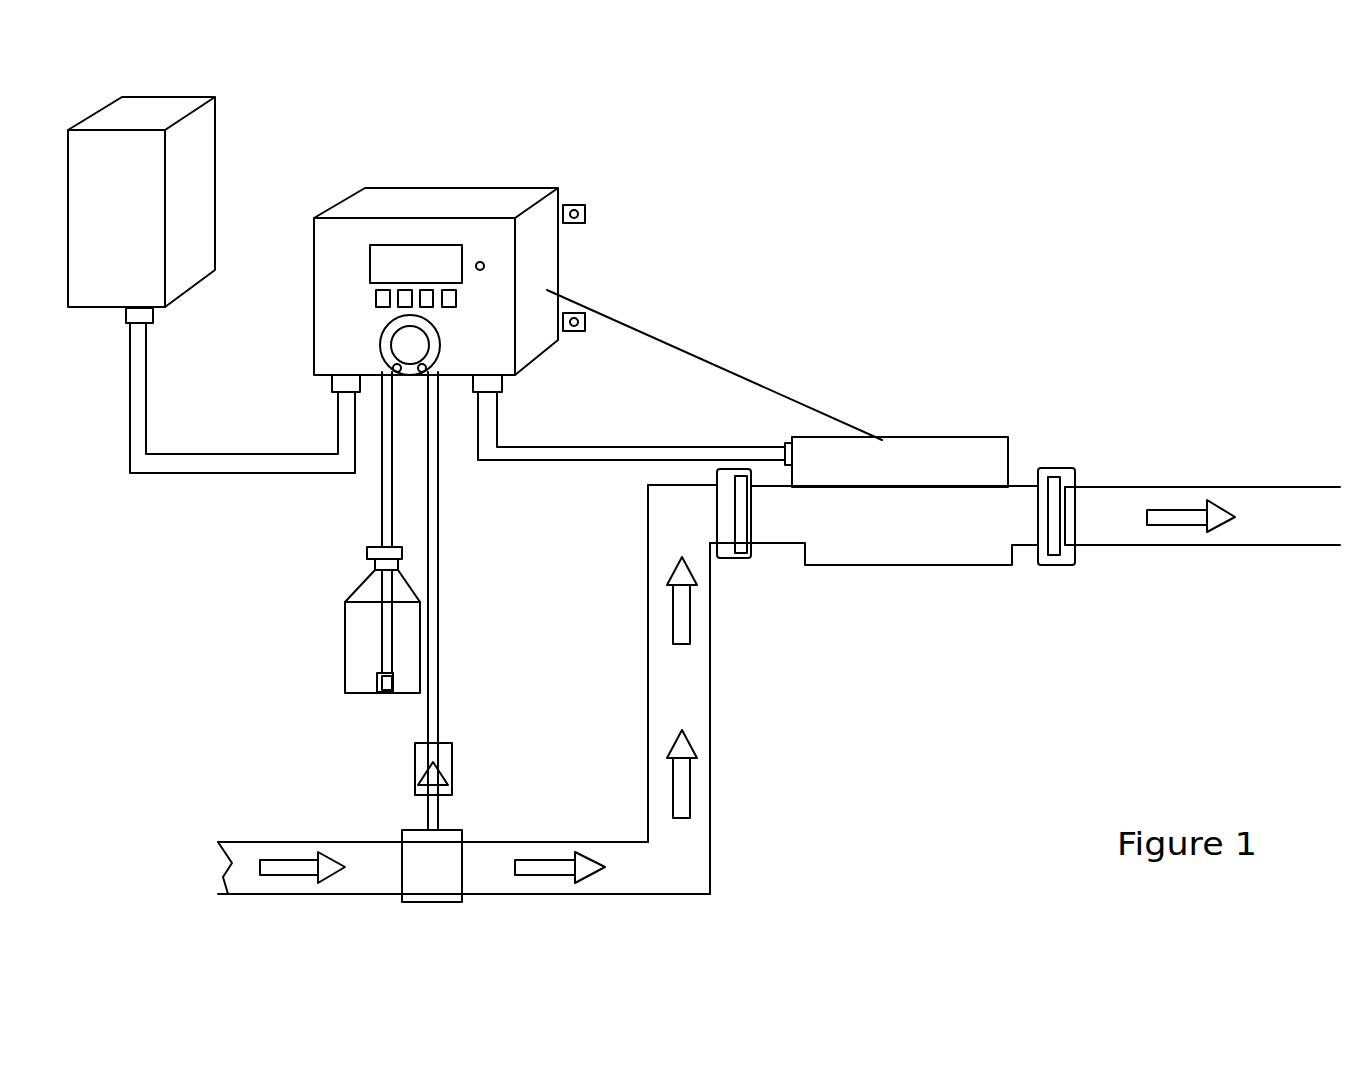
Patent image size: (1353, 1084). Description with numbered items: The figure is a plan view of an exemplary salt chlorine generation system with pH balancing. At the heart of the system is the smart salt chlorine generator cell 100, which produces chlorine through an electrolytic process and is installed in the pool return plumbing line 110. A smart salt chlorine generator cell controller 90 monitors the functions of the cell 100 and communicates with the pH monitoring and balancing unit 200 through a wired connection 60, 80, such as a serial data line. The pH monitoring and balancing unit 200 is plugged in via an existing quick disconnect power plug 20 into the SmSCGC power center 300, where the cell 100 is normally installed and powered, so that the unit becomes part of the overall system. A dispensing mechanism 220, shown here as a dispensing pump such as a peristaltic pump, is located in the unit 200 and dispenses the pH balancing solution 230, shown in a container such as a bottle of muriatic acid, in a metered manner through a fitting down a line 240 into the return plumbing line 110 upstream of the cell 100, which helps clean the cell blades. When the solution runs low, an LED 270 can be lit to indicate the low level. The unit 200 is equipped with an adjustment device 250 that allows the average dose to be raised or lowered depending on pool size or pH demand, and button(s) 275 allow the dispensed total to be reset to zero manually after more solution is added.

The SmSCGC power center 300 is at (205, 192).
The quick disconnect power plug 20 is at (242, 398).
The pH monitoring and balancing unit 200 is at (423, 203).
The wired connection 60 is at (330, 293).
The LED 270 is at (485, 266).
The adjustment device 250 is at (402, 303).
The button(s) 275 is at (455, 305).
The dispensing mechanism 220 is at (410, 350).
The line 240 is at (433, 569).
The pH balancing solution 230 is at (357, 665).
The wired connection 80 is at (714, 365).
The smart salt chlorine generator cell controller 90 is at (907, 467).
The smart salt chlorine generator cell 100 is at (910, 537).
The return plumbing line 110 is at (693, 733).